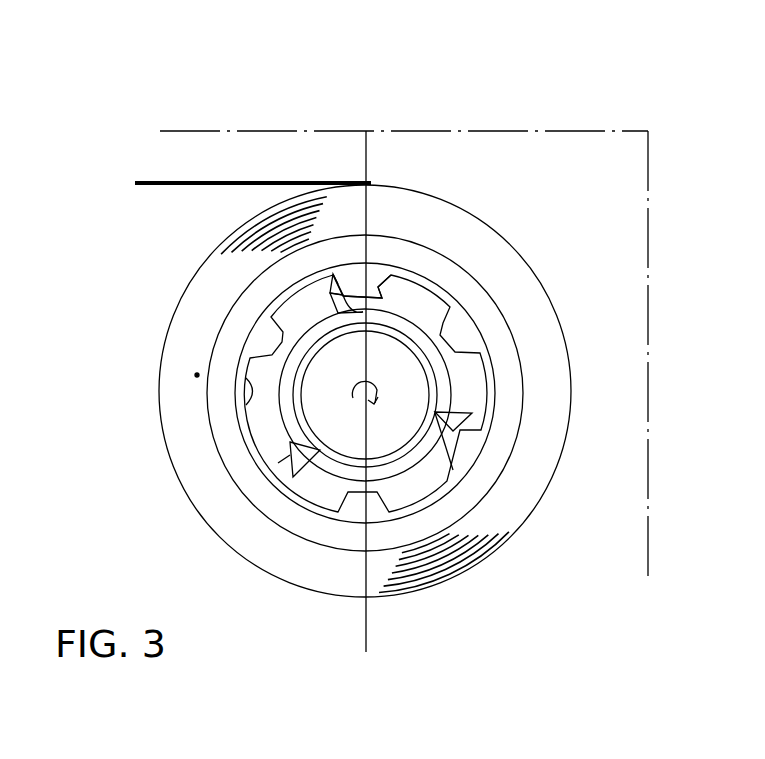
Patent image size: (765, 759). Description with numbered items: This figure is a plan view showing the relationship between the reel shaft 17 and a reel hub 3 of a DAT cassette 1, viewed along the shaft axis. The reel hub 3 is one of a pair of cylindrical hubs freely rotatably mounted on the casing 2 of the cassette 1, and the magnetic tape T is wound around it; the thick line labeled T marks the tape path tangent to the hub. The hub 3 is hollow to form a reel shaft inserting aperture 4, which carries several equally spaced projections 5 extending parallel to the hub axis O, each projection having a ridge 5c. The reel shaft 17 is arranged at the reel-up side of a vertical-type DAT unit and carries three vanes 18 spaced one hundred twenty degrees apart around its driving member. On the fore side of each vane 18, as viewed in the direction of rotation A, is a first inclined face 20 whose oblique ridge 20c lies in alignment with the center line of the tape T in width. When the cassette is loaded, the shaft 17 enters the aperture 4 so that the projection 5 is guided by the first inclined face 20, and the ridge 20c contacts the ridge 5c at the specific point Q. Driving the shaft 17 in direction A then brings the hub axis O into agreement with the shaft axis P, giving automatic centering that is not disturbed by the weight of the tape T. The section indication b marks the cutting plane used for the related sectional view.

The DAT cassette 1 is at (514, 124).
The casing 2 is at (347, 130).
The reel hub 3 is at (234, 344).
The reel shaft inserting aperture 4 is at (244, 384).
The projection 5 is at (374, 270).
The ridge of the projection 5c is at (362, 309).
The reel shaft 17 is at (457, 383).
The vane 18 is at (328, 319).
The first inclined face 20 is at (334, 302).
The ridge of the first inclined face 20c is at (336, 282).
The magnetic tape T is at (190, 182).
The specific contact point Q is at (345, 292).
The axis of the reel hub O is at (362, 397).
The axis of the reel shaft P is at (360, 399).
The direction of rotation A is at (385, 404).
The section b- b is at (370, 155).